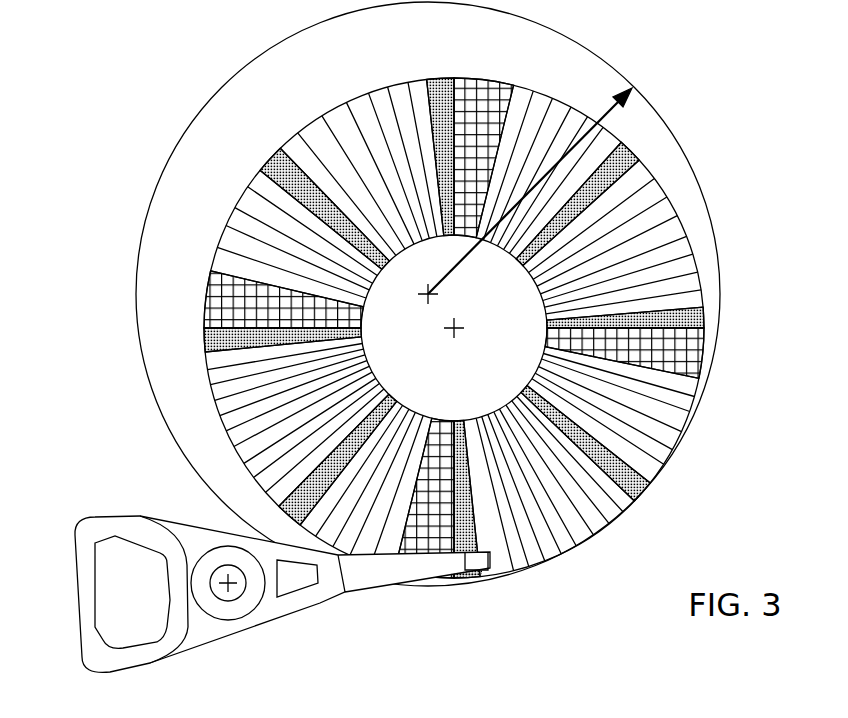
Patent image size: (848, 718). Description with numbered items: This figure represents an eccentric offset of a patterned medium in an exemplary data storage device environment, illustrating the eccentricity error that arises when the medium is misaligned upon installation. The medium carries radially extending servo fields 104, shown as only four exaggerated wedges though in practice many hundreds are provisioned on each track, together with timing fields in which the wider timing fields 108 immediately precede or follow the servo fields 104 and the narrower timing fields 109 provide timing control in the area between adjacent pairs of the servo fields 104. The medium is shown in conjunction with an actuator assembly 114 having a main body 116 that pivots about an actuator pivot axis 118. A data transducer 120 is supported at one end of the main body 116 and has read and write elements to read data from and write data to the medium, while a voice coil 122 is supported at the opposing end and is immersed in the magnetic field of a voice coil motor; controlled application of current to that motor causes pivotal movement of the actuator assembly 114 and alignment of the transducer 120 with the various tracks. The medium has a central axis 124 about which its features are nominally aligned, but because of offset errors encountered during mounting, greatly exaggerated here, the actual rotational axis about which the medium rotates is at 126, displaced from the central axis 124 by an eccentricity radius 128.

The servo field 104 is at (240, 263).
The wider timing field 108 is at (215, 348).
The narrower timing field 109 is at (276, 432).
The actuator assembly 114 is at (278, 572).
The main body 116 is at (305, 598).
The actuator pivot axis 118 is at (233, 587).
The data transducer 120 is at (482, 562).
The voice coil 122 is at (83, 607).
The central axis 124 is at (457, 332).
The rotational axis 126 is at (428, 299).
The eccentricity radius 128 is at (605, 118).